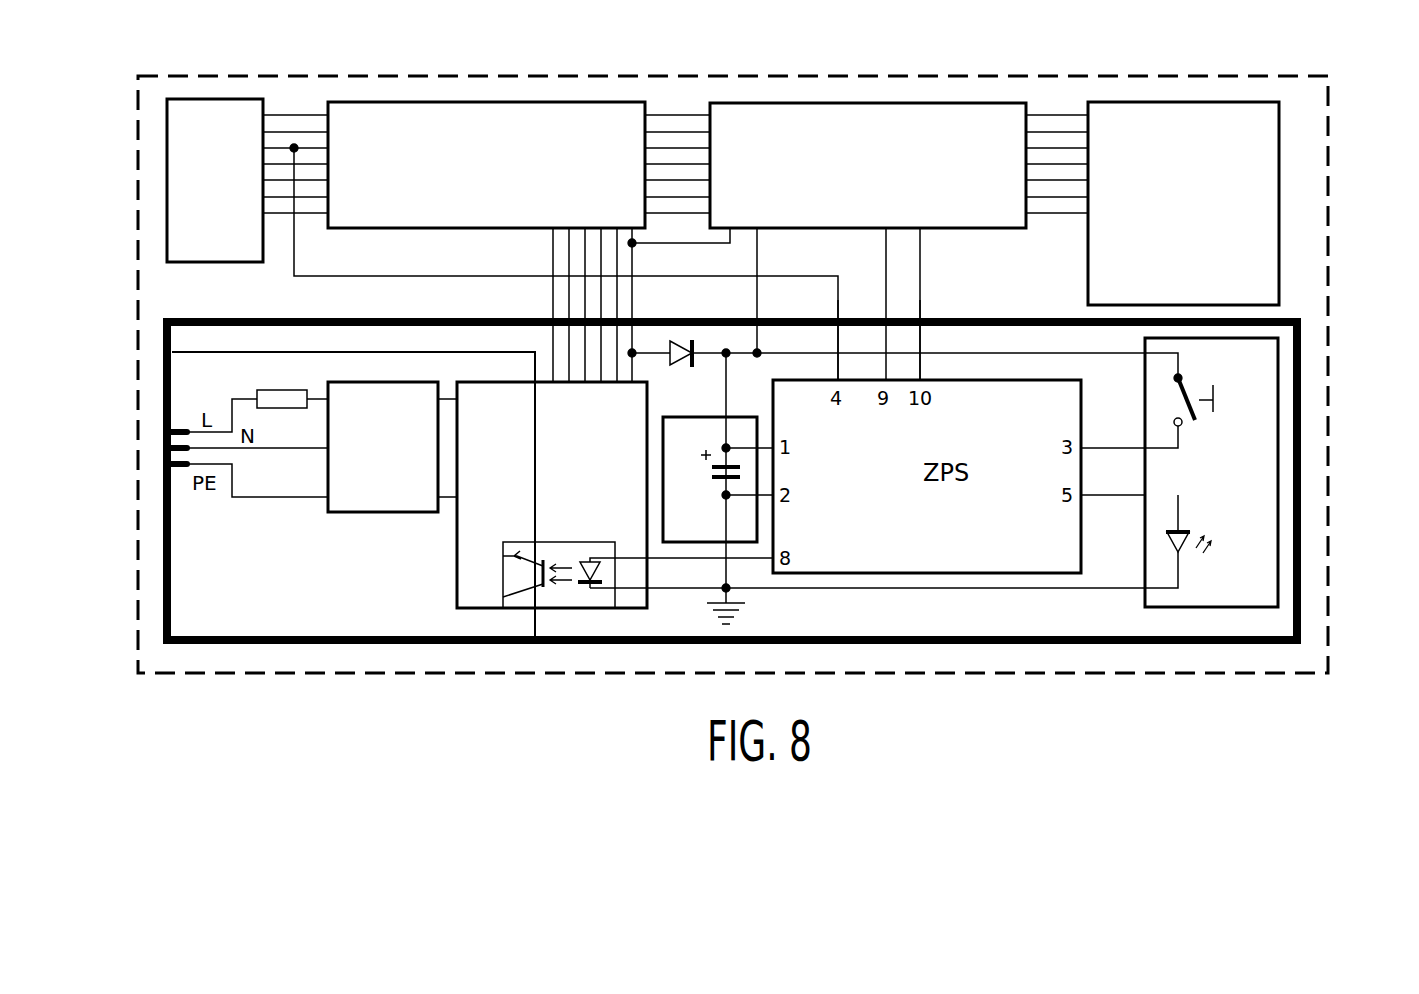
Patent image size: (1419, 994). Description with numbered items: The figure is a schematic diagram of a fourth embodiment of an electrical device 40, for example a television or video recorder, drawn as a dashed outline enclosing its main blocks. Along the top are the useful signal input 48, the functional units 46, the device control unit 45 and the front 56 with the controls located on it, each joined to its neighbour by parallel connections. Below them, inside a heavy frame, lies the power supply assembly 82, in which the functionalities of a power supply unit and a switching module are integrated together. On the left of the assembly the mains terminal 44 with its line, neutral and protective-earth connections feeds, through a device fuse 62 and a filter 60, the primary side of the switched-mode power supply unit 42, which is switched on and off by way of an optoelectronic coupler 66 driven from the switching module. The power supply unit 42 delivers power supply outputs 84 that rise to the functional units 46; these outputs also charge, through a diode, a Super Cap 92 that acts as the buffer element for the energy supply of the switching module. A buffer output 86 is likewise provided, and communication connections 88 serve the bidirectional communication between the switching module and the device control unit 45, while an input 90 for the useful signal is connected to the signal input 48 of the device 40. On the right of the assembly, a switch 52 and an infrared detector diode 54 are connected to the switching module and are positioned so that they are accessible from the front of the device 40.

The electrical device 40 is at (761, 76).
The useful signal input 48 is at (230, 188).
The functional units 46 is at (494, 175).
The device control unit 45 is at (890, 175).
The front 56 is at (1206, 210).
The power supply assembly 82 is at (1302, 410).
The power supply outputs 84 is at (591, 383).
The buffer output 86 is at (757, 313).
The input for a useful signal 90 is at (838, 318).
The communication connections 88 is at (920, 320).
The mains terminal 44 is at (167, 446).
The device fuse 62 is at (277, 408).
The filter 60 is at (396, 460).
The power supply unit 42 is at (607, 478).
The optoelectronic coupler 66 is at (566, 552).
The Super Cap 92 is at (712, 477).
The switch 52 is at (1200, 398).
The infrared detector diode 54 is at (1187, 548).